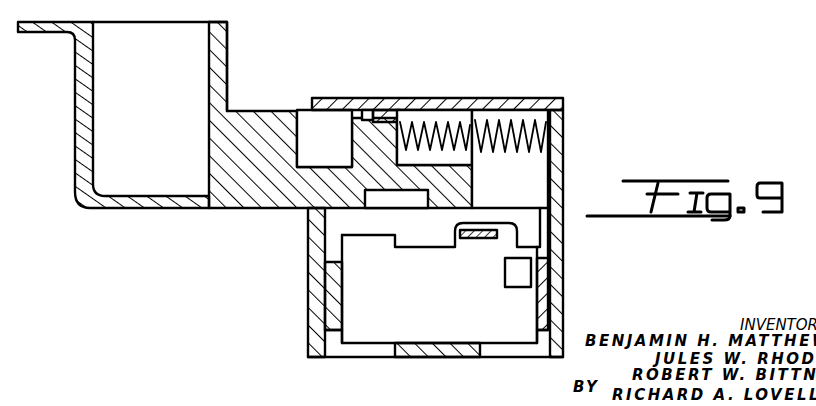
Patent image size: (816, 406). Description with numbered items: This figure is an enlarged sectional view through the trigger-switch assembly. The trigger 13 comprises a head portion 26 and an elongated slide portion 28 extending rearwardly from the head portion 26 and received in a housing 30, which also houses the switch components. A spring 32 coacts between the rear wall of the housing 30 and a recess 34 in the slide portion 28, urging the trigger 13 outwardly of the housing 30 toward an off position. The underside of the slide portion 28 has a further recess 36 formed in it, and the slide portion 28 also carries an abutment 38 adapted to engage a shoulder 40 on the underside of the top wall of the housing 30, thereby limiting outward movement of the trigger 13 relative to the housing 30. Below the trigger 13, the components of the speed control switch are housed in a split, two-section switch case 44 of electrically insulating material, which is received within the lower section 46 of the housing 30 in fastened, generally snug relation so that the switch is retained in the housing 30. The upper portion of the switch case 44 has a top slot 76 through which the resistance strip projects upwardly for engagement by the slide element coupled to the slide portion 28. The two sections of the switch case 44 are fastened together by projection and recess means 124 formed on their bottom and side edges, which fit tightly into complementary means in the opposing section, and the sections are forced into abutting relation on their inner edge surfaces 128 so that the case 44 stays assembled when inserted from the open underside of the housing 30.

The trigger 13 is at (75, 141).
The head portion 26 is at (228, 43).
The slide portion 28 is at (258, 192).
The housing 30 is at (563, 123).
The spring 32 is at (508, 130).
The recess 34 is at (422, 118).
The recess 36 is at (362, 190).
The abutment 38 is at (397, 118).
The shoulder 40 is at (372, 116).
The switch case 44 is at (439, 289).
The lower section 46 is at (308, 265).
The top slot 76 is at (445, 233).
The projection and recess means 124 is at (333, 298).
The inner edge surfaces 128 is at (357, 348).